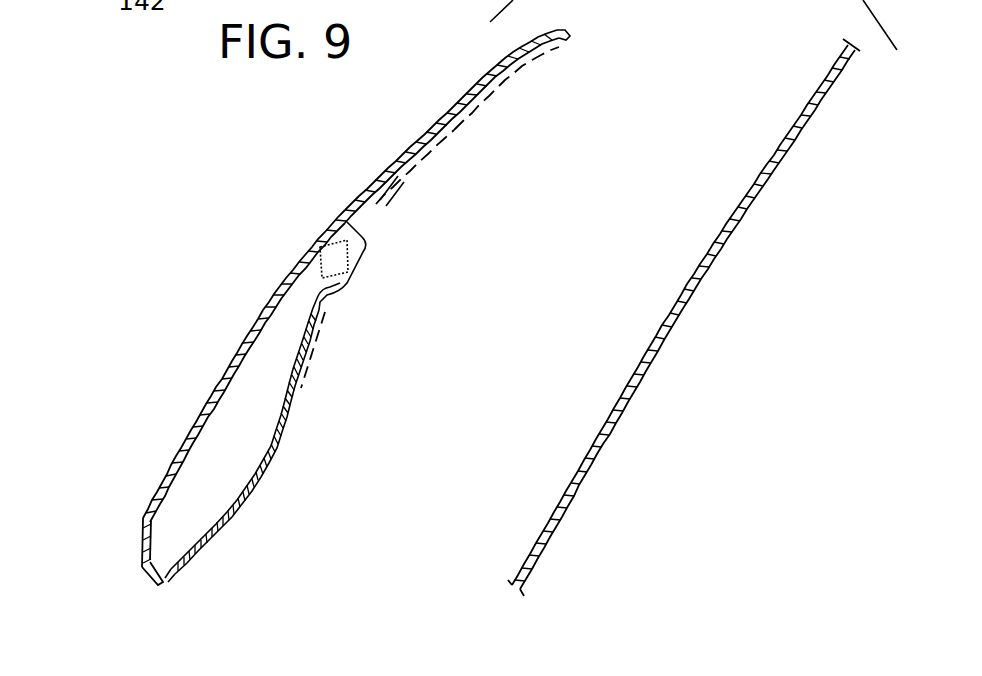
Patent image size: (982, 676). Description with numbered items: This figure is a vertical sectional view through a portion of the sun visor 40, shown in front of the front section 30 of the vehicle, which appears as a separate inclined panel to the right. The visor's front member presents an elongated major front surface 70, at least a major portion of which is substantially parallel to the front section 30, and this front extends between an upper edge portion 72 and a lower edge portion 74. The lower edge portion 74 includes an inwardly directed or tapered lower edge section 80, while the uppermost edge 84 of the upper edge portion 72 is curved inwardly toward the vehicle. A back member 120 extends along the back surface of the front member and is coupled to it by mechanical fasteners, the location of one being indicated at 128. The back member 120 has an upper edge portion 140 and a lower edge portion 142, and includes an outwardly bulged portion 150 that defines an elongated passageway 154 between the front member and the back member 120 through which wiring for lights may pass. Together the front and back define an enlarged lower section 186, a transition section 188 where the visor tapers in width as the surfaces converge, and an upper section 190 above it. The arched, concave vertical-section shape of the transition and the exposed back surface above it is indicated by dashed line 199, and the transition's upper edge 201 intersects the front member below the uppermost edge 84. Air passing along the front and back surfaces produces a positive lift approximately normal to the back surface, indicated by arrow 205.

The front section of the vehicle 30 is at (748, 193).
The sun visor 40 is at (357, 185).
The major front surface 70 is at (265, 320).
The upper edge portion 72 is at (532, 31).
The lower edge portion 74 is at (125, 550).
The lower edge section 80 is at (142, 565).
The uppermost edge 84 is at (571, 33).
The back member 120 is at (237, 500).
The mechanical fasteners 128 is at (348, 264).
The upper edge portion of back 140 is at (372, 205).
The lower edge portion of back 142 is at (178, 566).
The outwardly bulged portion 150 is at (270, 453).
The passageway 154 is at (258, 420).
The lower section 186 is at (155, 527).
The transition section 188 is at (297, 307).
The upper section 190 is at (473, 92).
The dashed line 199 is at (415, 158).
The upper edge of transition back portion 201 is at (396, 176).
The arrow indicating positive lift 205 is at (458, 117).